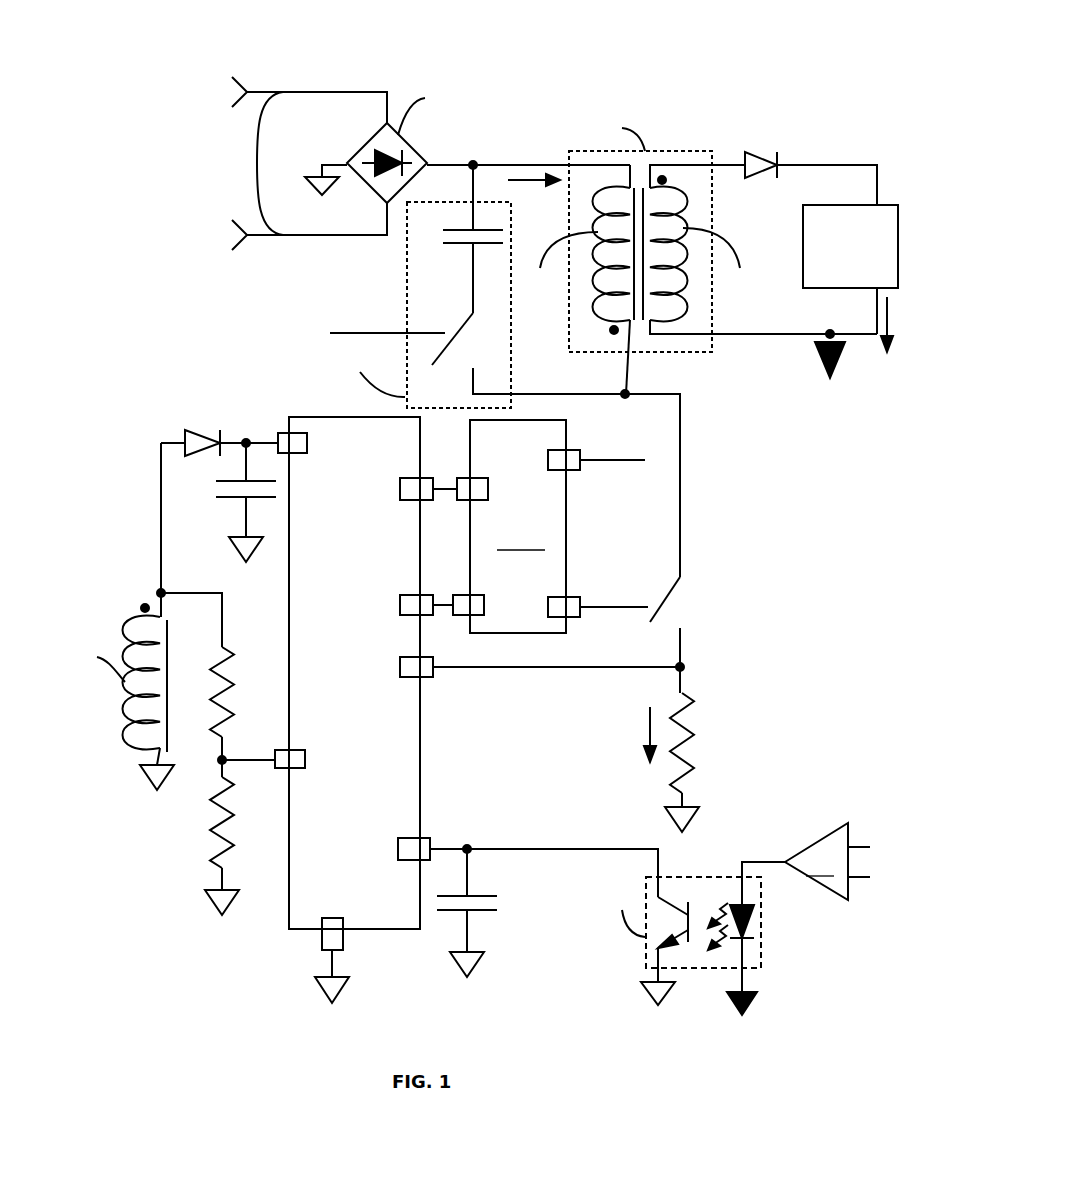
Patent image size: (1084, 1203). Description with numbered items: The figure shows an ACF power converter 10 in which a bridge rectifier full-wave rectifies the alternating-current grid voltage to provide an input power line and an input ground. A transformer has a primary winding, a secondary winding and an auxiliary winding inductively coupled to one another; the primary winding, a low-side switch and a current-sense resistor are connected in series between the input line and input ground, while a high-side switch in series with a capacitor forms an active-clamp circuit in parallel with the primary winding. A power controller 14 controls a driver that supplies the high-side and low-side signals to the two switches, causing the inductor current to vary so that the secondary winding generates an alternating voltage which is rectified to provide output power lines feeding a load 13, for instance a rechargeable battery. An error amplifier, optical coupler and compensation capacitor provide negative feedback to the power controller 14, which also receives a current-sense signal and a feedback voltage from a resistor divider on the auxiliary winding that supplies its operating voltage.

The ACF power converter 10 is at (521, 54).
The load 13 is at (862, 272).
The power controller 14 is at (348, 588).